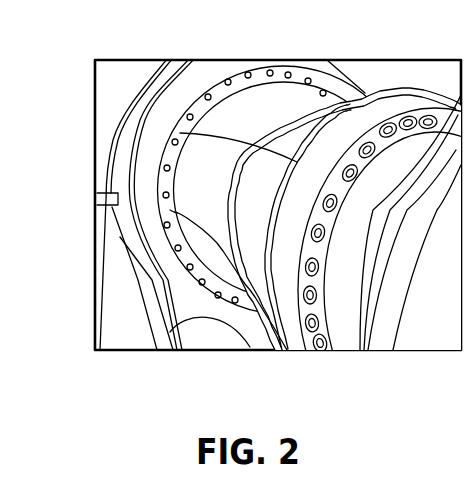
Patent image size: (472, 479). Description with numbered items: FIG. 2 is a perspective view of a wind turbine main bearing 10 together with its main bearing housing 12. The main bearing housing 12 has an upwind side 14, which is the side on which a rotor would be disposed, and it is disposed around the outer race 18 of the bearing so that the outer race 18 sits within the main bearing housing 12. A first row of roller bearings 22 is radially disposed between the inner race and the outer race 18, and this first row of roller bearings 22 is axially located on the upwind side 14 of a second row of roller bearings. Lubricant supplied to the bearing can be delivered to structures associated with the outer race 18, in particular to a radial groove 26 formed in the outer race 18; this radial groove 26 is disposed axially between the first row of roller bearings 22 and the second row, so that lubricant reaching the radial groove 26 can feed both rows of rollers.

The wind turbine main bearing 10 is at (78, 113).
The main bearing housing 12 is at (121, 163).
The upwind side 14 is at (168, 125).
The outer race 18 is at (250, 282).
The first row of roller bearings 22 is at (317, 297).
The radial groove 26 is at (293, 165).